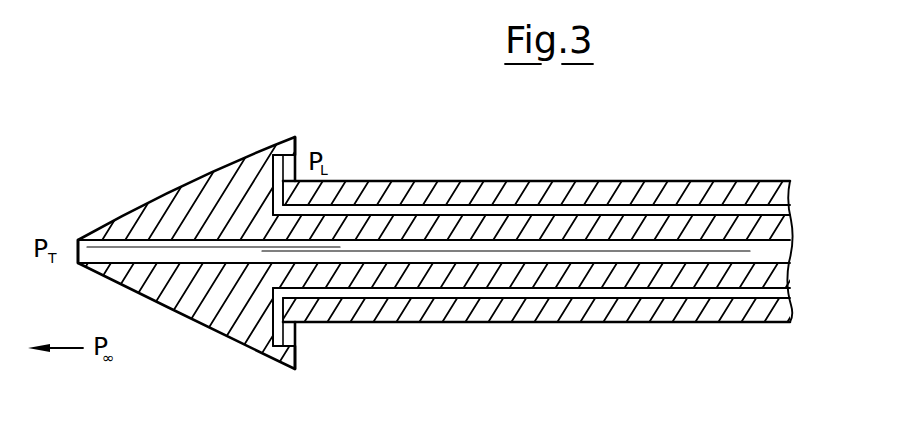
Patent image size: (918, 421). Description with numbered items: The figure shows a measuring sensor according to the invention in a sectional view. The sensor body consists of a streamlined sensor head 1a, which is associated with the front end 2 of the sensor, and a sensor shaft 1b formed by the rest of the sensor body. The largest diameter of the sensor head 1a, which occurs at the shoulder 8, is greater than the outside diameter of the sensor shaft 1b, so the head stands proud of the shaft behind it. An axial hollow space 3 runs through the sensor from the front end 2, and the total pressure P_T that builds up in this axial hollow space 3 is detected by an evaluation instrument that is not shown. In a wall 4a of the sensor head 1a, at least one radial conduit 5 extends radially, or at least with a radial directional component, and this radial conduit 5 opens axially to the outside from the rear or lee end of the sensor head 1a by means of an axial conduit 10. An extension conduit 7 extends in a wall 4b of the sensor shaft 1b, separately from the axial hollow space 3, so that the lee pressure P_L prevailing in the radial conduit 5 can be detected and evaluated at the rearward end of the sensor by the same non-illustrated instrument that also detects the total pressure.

The sensor head 1a is at (147, 188).
The wall of the sensor head 4a is at (208, 195).
The axial hollow space 3 is at (103, 255).
The front end 2 is at (76, 255).
The radial conduit 5 is at (267, 168).
The shoulder 8 is at (295, 150).
The axial conduit 10 is at (297, 168).
The extension conduit 7 is at (420, 207).
The sensor shaft 1b is at (523, 158).
The wall of the sensor shaft 4b is at (613, 190).